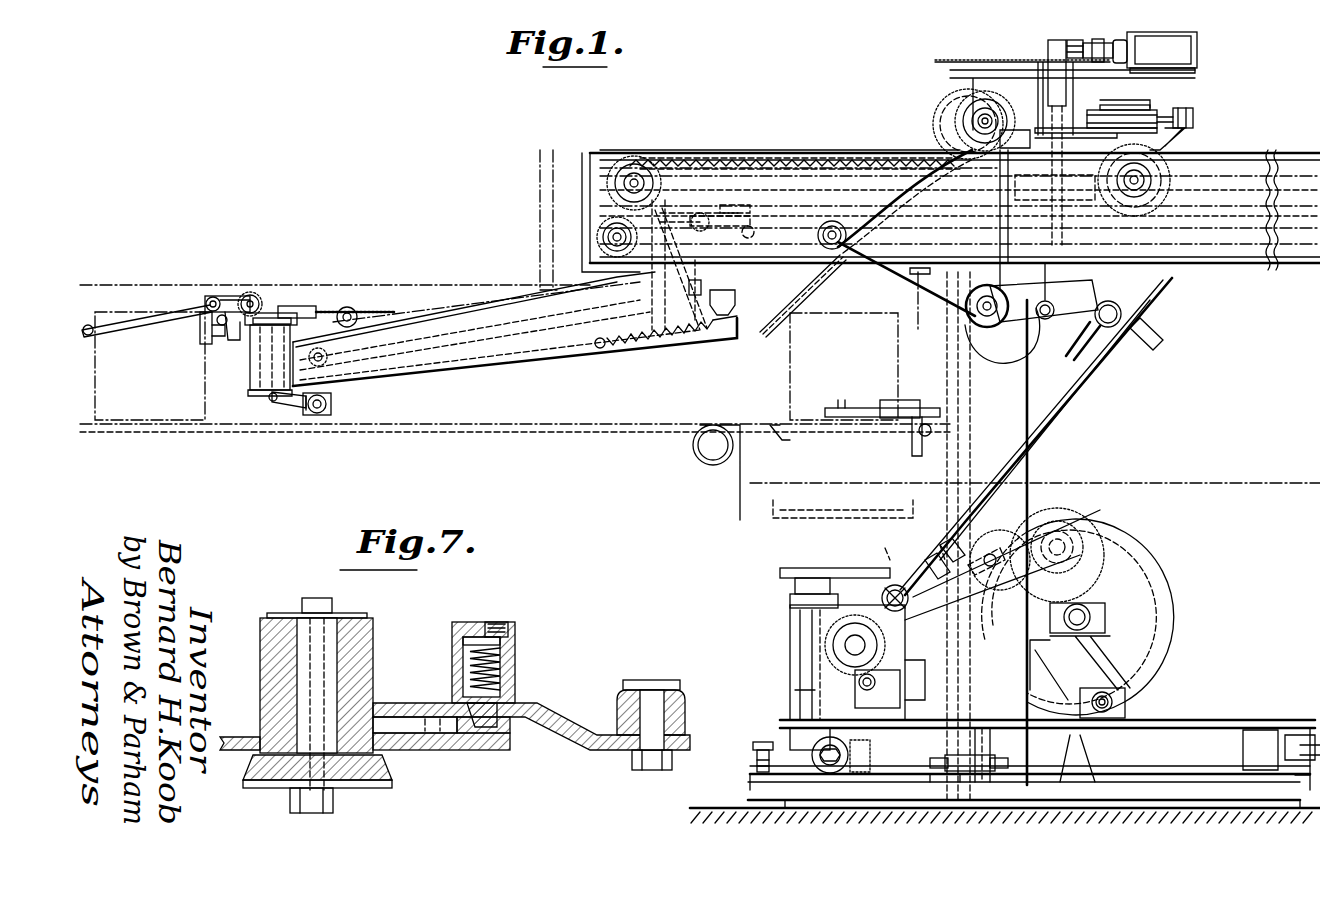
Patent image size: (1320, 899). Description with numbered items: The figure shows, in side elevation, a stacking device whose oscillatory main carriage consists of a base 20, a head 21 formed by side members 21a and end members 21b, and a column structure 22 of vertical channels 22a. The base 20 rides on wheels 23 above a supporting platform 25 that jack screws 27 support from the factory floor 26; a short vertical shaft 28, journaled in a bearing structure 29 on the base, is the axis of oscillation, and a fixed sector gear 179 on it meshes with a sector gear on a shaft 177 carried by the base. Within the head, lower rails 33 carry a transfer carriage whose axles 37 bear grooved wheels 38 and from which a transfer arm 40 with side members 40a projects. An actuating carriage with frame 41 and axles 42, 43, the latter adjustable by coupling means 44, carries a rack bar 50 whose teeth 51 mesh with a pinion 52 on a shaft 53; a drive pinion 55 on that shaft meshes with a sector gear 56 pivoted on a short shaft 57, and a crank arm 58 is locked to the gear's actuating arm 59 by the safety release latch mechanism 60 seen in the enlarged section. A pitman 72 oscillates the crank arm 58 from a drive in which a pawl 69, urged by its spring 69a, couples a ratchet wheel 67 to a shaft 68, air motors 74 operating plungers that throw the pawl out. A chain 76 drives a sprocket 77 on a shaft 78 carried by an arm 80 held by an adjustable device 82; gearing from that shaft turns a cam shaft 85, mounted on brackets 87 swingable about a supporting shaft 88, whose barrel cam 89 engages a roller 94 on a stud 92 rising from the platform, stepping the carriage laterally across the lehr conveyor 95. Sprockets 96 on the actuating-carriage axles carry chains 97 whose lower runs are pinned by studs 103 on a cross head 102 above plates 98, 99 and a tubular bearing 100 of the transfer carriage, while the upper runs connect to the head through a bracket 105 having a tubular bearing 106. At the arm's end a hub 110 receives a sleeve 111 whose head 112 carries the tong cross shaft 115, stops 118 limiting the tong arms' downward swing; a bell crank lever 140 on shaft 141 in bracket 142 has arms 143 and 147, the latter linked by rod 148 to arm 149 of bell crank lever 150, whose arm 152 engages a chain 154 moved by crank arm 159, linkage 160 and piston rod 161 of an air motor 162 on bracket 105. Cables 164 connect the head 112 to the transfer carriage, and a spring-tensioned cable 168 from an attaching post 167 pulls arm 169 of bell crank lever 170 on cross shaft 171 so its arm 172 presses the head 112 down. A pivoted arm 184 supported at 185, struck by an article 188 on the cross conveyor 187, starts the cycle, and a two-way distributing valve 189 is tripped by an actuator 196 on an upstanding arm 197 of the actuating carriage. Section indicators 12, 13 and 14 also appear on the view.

In FIG. 1, the arm 12 is at (147, 321).
In FIG. 1, the bracket 13 is at (225, 320).
In FIG. 1, the support bracket 14 is at (233, 320).
In FIG. 1, the base frame 20 is at (1212, 718).
In FIG. 1, the boom housing 21 is at (1243, 150).
In FIG. 1, the boom section 21a is at (1265, 170).
In FIG. 1, the boom end 21b is at (578, 160).
In FIG. 1, the tilting frame 22 is at (1032, 452).
In FIG. 1, the frame member 22a is at (1040, 462).
In FIG. 7, the frame member 22a is at (364, 790).
In FIG. 1, the wheel 23 is at (812, 758).
In FIG. 1, the base plate 25 is at (1162, 775).
In FIG. 1, the base rail 26 is at (1165, 812).
In FIG. 1, the bolt 27 is at (755, 767).
In FIG. 1, the base plate 28 is at (945, 803).
In FIG. 1, the support post 29 is at (975, 742).
In FIG. 1, the link rod 33 is at (805, 285).
In FIG. 1, the sprocket 37 is at (605, 238).
In FIG. 1, the shaft 38 is at (845, 272).
In FIG. 1, the arm 40 is at (520, 368).
In FIG. 1, the arm frame 40a is at (790, 325).
In FIG. 1, the chain guard 41 is at (810, 150).
In FIG. 1, the sprocket 42 is at (650, 162).
In FIG. 1, the sprocket 43 is at (1150, 205).
In FIG. 1, the sprocket 44 is at (1120, 215).
In FIG. 1, the chain 50 is at (760, 165).
In FIG. 1, the chain guide 51 is at (748, 162).
In FIG. 1, the drive chain 52 is at (945, 132).
In FIG. 1, the sprocket 53 is at (960, 110).
In FIG. 1, the sprocket 55 is at (995, 115).
In FIG. 1, the lever 56 is at (906, 279).
In FIG. 7, the lever 56 is at (230, 737).
In FIG. 1, the pivot pin 57 is at (975, 315).
In FIG. 7, the pivot pin 57 is at (330, 668).
In FIG. 1, the arm 58 is at (1072, 298).
In FIG. 7, the arm 58 is at (404, 703).
In FIG. 1, the plate 59 is at (990, 340).
In FIG. 7, the plate 59 is at (445, 750).
In FIG. 7, the spring housing 60 is at (514, 690).
In FIG. 1, the housing 67 is at (810, 668).
In FIG. 1, the housing wall 68 is at (835, 690).
In FIG. 1, the gear 69 is at (820, 634).
In FIG. 1, the gear cover 69a is at (840, 617).
In FIG. 1, the link 72 is at (948, 540).
In FIG. 1, the bearing 74 is at (895, 585).
In FIG. 1, the link 76 is at (990, 545).
In FIG. 1, the gear 77 is at (1090, 512).
In FIG. 1, the pinion 78 is at (1090, 540).
In FIG. 1, the gear 80 is at (1005, 520).
In FIG. 1, the rod 82 is at (960, 598).
In FIG. 1, the hub 85 is at (1080, 615).
In FIG. 1, the arm 87 is at (1110, 690).
In FIG. 1, the bearing 88 is at (1125, 700).
In FIG. 1, the wheel 89 is at (1170, 580).
In FIG. 1, the brace 92 is at (1068, 730).
In FIG. 1, the arm 94 is at (1051, 670).
In FIG. 1, the rail 95 is at (430, 427).
In FIG. 1, the bracket 96 is at (590, 200).
In FIG. 1, the chain guide 97 is at (828, 210).
In FIG. 1, the cam 98 is at (745, 235).
In FIG. 1, the link 99 is at (735, 282).
In FIG. 1, the rod 100 is at (730, 279).
In FIG. 1, the slide 102 is at (755, 215).
In FIG. 1, the slide guide 103 is at (752, 210).
In FIG. 1, the cylinder 105 is at (1150, 100).
In FIG. 1, the cylinder 106 is at (1085, 112).
In FIG. 1, the motor 110 is at (250, 378).
In FIG. 1, the motor base 111 is at (257, 398).
In FIG. 1, the motor cap 112 is at (288, 318).
In FIG. 1, the gear 115 is at (252, 300).
In FIG. 1, the motor housing 118 is at (258, 345).
In FIG. 1, the pin 140 is at (330, 404).
In FIG. 1, the link 141 is at (322, 415).
In FIG. 1, the link 142 is at (330, 395).
In FIG. 1, the arm 143 is at (292, 410).
In FIG. 1, the pulley 147 is at (310, 352).
In FIG. 1, the cable 148 is at (458, 372).
In FIG. 1, the link 149 is at (680, 290).
In FIG. 1, the roller 150 is at (632, 262).
In FIG. 1, the roller 152 is at (700, 233).
In FIG. 1, the guide 154 is at (1010, 195).
In FIG. 1, the shaft support 159 is at (1068, 48).
In FIG. 1, the coupling 160 is at (1095, 38).
In FIG. 1, the shaft 161 is at (1120, 44).
In FIG. 1, the motor 162 is at (1165, 36).
In FIG. 1, the cable 164 is at (392, 310).
In FIG. 1, the spring end 167 is at (742, 342).
In FIG. 1, the spring 168 is at (585, 355).
In FIG. 1, the cable 169 is at (390, 378).
In FIG. 1, the cable 170 is at (380, 322).
In FIG. 1, the pulley 171 is at (350, 310).
In FIG. 1, the cylinder 172 is at (312, 306).
In FIG. 1, the brace 177 is at (975, 440).
In FIG. 1, the clamp 179 is at (990, 788).
In FIG. 1, the bracket 184 is at (888, 407).
In FIG. 1, the bracket leg 185 is at (922, 440).
In FIG. 1, the plate 187 is at (818, 408).
In FIG. 1, the container 188 is at (496, 366).
In FIG. 1, the piston rod 189 is at (1130, 108).
In FIG. 1, the plunger 196 is at (1183, 110).
In FIG. 1, the bracket 197 is at (1190, 133).